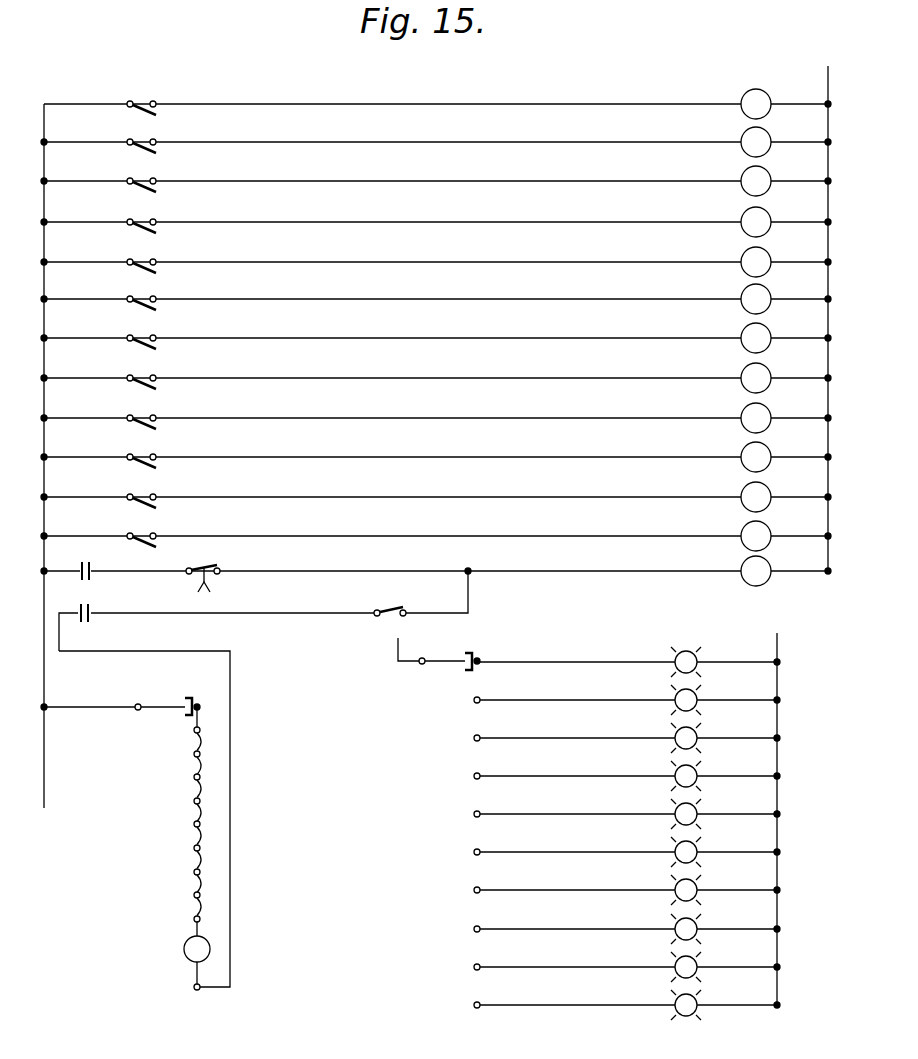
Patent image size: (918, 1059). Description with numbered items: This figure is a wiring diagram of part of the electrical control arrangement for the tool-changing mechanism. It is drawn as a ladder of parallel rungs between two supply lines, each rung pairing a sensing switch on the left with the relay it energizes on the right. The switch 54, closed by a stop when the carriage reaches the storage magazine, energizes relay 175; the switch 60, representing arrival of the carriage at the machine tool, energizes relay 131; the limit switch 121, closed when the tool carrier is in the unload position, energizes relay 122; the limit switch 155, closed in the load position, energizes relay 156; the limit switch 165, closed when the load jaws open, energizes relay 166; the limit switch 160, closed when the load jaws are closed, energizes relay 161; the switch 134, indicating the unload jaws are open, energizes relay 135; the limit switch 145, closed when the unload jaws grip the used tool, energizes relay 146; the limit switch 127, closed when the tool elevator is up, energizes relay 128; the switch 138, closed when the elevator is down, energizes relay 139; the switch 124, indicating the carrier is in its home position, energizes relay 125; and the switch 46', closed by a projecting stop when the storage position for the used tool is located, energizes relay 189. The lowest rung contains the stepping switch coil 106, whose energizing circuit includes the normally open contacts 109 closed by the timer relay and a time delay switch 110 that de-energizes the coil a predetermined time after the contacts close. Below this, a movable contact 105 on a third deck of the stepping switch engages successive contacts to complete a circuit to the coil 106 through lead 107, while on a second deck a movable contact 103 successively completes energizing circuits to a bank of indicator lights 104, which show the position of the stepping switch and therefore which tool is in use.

The switch 54 is at (156, 116).
The switch 60 is at (156, 154).
The limit switch 121 is at (156, 193).
The limit switch 155 is at (156, 234).
The limit switch 165 is at (156, 274).
The limit switch 160 is at (156, 311).
The switch 134 is at (156, 350).
The limit switch 145 is at (156, 390).
The limit switch 127 is at (156, 430).
The switch 138 is at (156, 469).
The switch 124 is at (156, 509).
The switch 46' is at (164, 546).
The normally open contacts 109 is at (101, 563).
The time delay switch 110 is at (220, 560).
The relay 175 is at (762, 89).
The relay 131 is at (762, 127).
The relay 122 is at (762, 166).
The relay 156 is at (762, 207).
The relay 166 is at (762, 247).
The relay 161 is at (762, 284).
The relay 135 is at (762, 323).
The relay 146 is at (762, 363).
The relay 128 is at (762, 403).
The relay 139 is at (762, 442).
The relay 125 is at (762, 482).
The relay 189 is at (762, 521).
The stepping switch coil 106 is at (762, 556).
The lead 107 is at (232, 688).
The movable contact 105 is at (155, 712).
The movable contact 103 is at (445, 663).
The indicator lights 104 is at (693, 647).